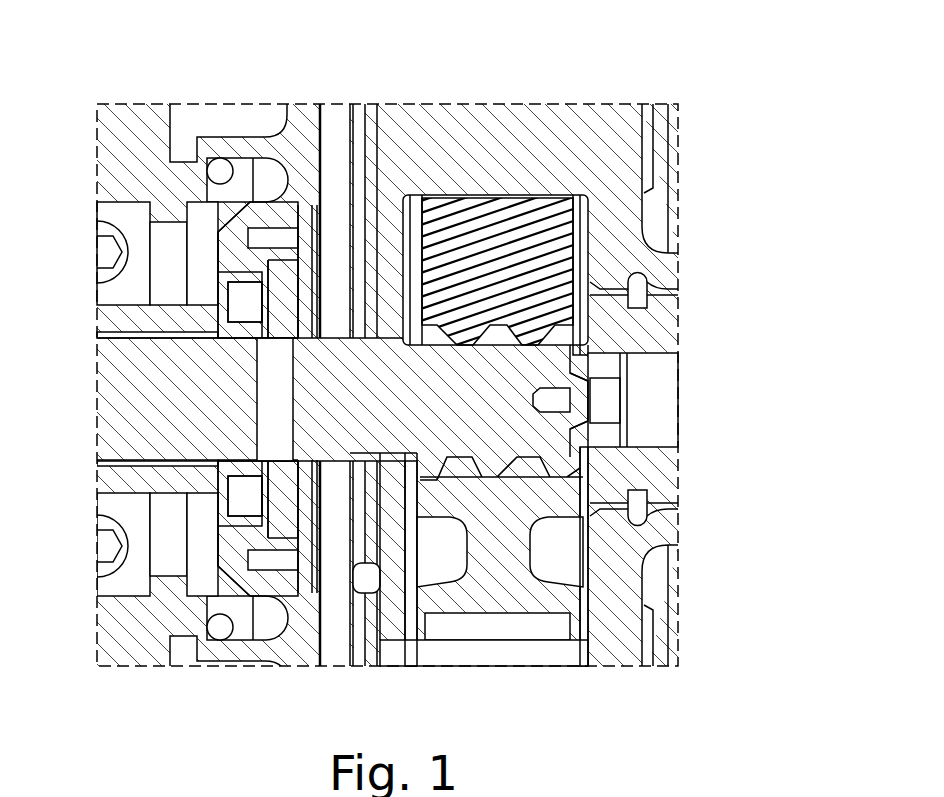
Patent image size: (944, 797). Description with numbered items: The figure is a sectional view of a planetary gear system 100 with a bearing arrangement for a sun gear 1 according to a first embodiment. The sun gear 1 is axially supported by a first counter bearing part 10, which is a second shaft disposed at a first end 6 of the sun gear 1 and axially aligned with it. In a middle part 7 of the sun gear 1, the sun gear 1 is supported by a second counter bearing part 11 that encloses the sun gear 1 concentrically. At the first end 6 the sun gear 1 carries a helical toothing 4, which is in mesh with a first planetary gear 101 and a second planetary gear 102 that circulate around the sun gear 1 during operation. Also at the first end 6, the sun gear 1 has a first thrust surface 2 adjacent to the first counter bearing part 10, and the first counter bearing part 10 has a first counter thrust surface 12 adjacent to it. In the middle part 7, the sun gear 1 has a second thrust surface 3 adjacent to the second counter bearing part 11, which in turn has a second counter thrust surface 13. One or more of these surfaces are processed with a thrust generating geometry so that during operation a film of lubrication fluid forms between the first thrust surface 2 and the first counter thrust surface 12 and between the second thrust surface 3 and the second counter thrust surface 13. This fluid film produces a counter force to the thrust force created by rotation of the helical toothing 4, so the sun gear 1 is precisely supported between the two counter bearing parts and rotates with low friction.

The planetary gear system 100 is at (695, 78).
The first counter bearing part 10 is at (667, 325).
The sun gear 1 is at (403, 410).
The middle part 7 is at (281, 410).
The helical toothing 4 is at (500, 226).
The first planetary gear 101 is at (502, 228).
The second planetary gear 102 is at (505, 618).
The first counter thrust surface 12 is at (623, 358).
The first thrust surface 2 is at (572, 425).
The first end 6 is at (548, 437).
The second counter thrust surface 13 is at (266, 462).
The second counter bearing part 11 is at (280, 655).
The second thrust surface 3 is at (291, 458).